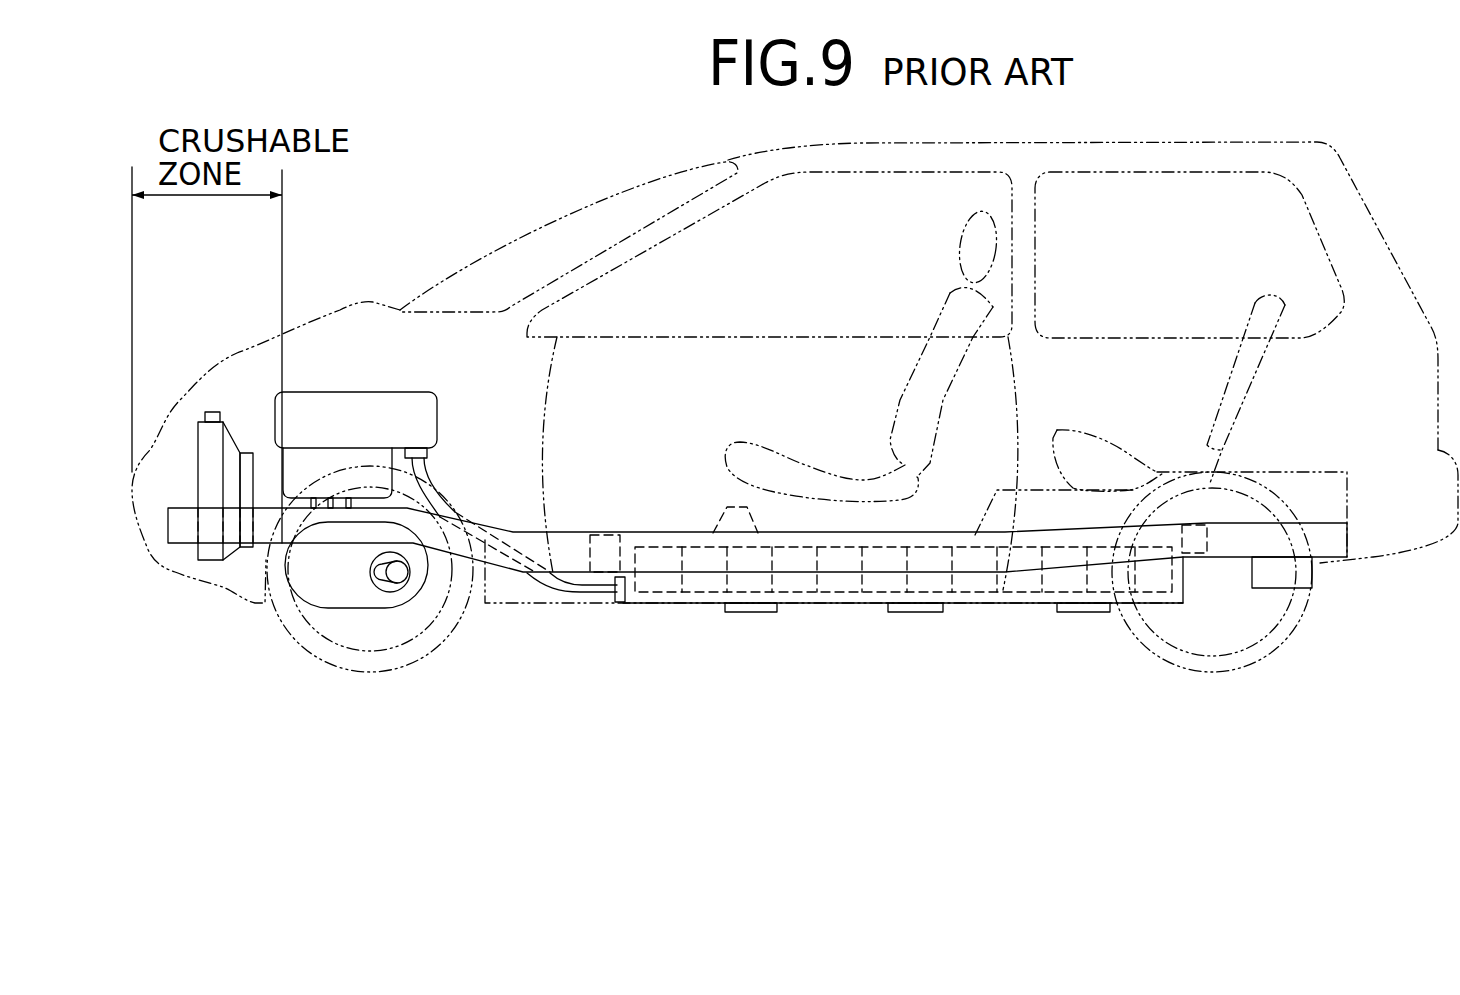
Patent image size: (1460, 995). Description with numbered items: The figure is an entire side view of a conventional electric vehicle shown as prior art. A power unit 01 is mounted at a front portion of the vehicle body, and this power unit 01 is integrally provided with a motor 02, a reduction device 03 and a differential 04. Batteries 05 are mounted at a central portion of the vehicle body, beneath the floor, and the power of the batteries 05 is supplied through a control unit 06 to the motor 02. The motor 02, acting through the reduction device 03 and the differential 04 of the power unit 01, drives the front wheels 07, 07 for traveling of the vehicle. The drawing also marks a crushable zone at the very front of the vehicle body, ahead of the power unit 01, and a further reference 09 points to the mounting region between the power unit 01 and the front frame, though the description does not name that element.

The power unit 01 is at (347, 607).
The motor 02 is at (287, 568).
The reduction device 03 is at (378, 610).
The differential 04 is at (408, 578).
The batteries 05 is at (977, 553).
The control unit 06 is at (368, 390).
The front wheels 07 is at (458, 630).
The motor mounts 09 is at (349, 517).